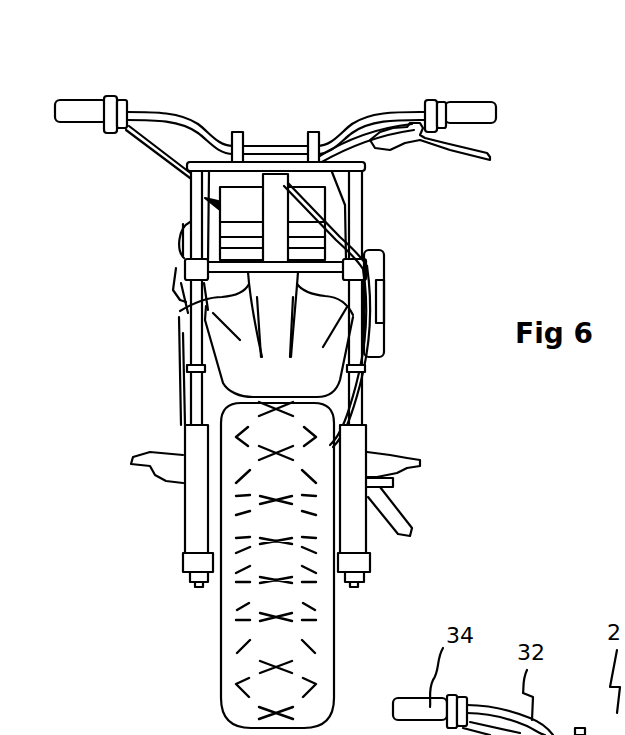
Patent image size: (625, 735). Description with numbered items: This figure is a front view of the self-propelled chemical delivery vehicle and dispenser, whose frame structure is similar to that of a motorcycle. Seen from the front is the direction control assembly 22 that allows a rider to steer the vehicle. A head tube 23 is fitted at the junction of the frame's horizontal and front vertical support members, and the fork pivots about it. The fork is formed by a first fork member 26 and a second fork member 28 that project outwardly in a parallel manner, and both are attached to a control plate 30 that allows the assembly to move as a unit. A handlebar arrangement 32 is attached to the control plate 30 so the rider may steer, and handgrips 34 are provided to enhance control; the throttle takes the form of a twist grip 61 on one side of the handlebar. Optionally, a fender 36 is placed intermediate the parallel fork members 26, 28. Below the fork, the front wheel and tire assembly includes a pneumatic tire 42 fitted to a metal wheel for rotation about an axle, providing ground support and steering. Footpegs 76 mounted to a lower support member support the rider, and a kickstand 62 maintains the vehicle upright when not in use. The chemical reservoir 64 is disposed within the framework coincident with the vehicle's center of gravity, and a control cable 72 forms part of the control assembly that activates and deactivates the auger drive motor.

The direction control assembly 22 is at (270, 118).
The head tube 23 is at (278, 210).
The first fork member 26 is at (355, 224).
The second fork member 28 is at (203, 210).
The control plate 30 is at (340, 175).
The handlebar arrangement 32 is at (165, 112).
The handgrips 34 is at (473, 113).
The fender 36 is at (180, 311).
The pneumatic tire 42 is at (230, 657).
The twist grip 61 is at (80, 110).
The kickstand 62 is at (395, 530).
The chemical reservoir 64 is at (187, 380).
The control cable 72 is at (363, 365).
The footpegs 76 is at (412, 457).